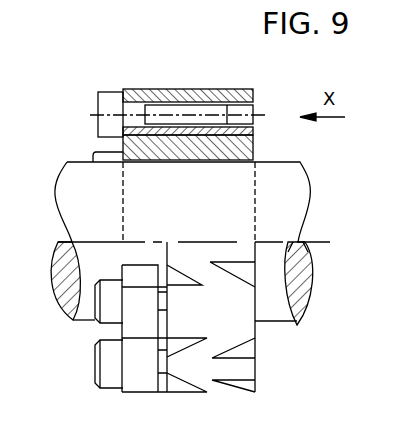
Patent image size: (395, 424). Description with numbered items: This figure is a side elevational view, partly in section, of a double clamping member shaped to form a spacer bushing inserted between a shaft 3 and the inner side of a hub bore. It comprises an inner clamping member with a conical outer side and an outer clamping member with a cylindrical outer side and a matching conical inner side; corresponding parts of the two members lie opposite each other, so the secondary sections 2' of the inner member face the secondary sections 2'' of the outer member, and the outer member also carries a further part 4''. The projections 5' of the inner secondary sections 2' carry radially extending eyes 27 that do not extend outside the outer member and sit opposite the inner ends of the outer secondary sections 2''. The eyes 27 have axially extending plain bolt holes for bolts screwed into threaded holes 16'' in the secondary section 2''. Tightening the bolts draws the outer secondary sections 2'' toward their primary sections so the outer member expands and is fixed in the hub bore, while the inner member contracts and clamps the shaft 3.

The shaft 3 is at (67, 188).
The projections of the secondary sections of the inner clamping member 5' is at (96, 145).
The secondary sections of the inner clamping member 2' is at (201, 143).
The radially extending eyes 27 is at (126, 91).
The threaded holes 16'' is at (221, 100).
The secondary sections of the outer clamping member 2'' is at (248, 222).
The threaded fastener 4'' is at (192, 317).